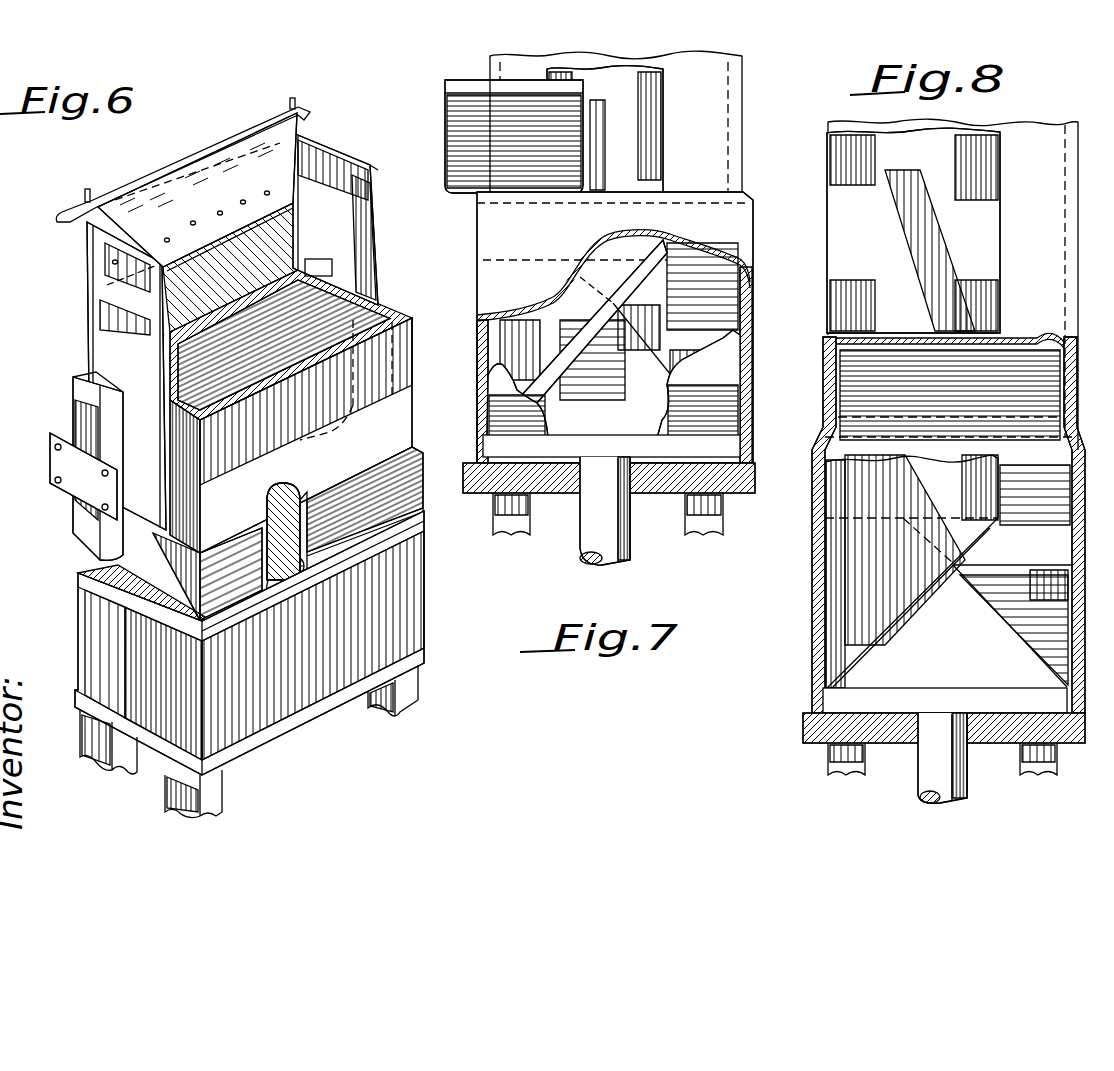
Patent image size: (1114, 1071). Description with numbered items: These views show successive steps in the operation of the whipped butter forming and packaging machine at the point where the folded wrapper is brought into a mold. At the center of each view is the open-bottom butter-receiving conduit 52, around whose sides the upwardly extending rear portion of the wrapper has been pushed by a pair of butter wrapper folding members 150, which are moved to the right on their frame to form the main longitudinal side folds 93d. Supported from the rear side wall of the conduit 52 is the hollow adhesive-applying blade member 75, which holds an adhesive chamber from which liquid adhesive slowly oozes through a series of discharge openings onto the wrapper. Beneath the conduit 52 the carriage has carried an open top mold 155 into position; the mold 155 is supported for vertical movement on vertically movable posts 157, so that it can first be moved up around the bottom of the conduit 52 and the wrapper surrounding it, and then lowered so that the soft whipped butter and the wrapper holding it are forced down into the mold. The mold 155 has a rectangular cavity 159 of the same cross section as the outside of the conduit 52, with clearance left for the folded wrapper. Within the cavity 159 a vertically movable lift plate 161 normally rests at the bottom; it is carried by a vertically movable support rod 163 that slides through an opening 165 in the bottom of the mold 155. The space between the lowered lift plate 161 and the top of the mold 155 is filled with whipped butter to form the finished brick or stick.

In FIG. 6, the butter-receiving conduit 52 is at (445, 386).
In FIG. 7, the butter-receiving conduit 52 is at (743, 88).
In FIG. 8, the butter-receiving conduit 52 is at (1086, 124).
In FIG. 6, the hollow adhesive-applying blade member 75 is at (128, 180).
In FIG. 6, the main longitudinal side folds 93d is at (100, 313).
In FIG. 7, the main longitudinal side folds 93d is at (655, 165).
In FIG. 8, the main longitudinal side folds 93d is at (985, 243).
In FIG. 6, the butter wrapper folding members 150 is at (60, 503).
In FIG. 7, the butter wrapper folding members 150 is at (498, 187).
In FIG. 6, the open top mold 155 is at (75, 611).
In FIG. 7, the open top mold 155 is at (636, 400).
In FIG. 8, the open top mold 155 is at (902, 574).
In FIG. 6, the vertically movable posts 157 is at (406, 702).
In FIG. 7, the vertically movable posts 157 is at (511, 540).
In FIG. 7, the rectangular cavity 159 is at (746, 303).
In FIG. 8, the rectangular cavity 159 is at (1066, 522).
In FIG. 7, the lift plate 161 is at (605, 437).
In FIG. 8, the lift plate 161 is at (918, 702).
In FIG. 7, the support rod 163 is at (590, 568).
In FIG. 8, the support rod 163 is at (915, 793).
In FIG. 7, the opening 165 is at (628, 493).
In FIG. 8, the opening 165 is at (922, 735).